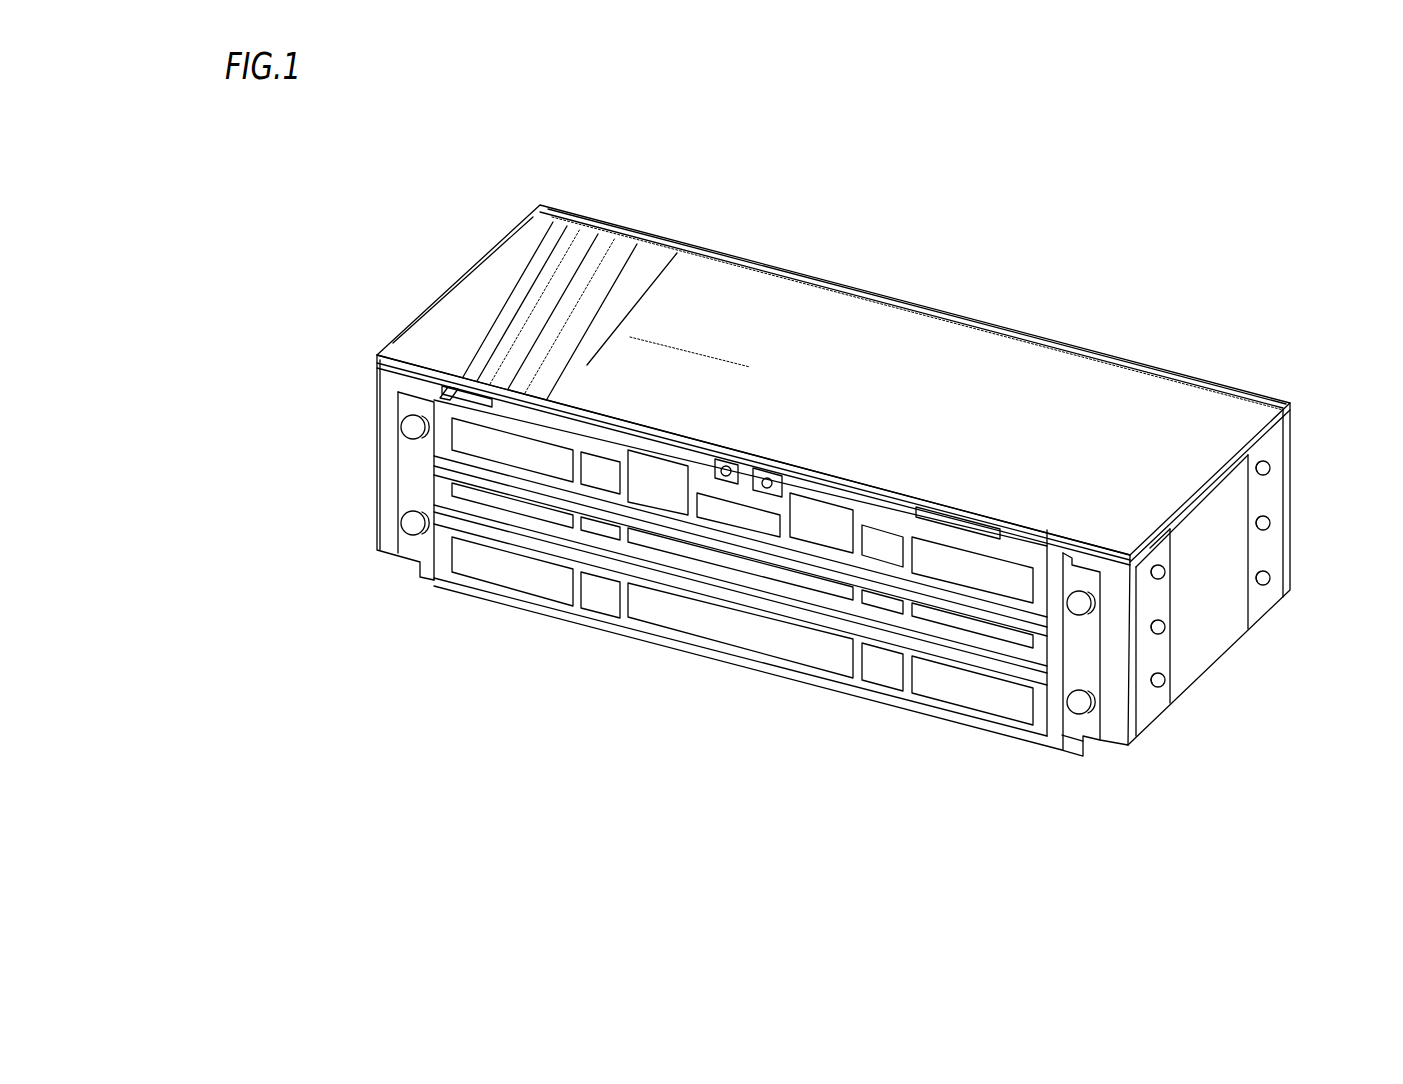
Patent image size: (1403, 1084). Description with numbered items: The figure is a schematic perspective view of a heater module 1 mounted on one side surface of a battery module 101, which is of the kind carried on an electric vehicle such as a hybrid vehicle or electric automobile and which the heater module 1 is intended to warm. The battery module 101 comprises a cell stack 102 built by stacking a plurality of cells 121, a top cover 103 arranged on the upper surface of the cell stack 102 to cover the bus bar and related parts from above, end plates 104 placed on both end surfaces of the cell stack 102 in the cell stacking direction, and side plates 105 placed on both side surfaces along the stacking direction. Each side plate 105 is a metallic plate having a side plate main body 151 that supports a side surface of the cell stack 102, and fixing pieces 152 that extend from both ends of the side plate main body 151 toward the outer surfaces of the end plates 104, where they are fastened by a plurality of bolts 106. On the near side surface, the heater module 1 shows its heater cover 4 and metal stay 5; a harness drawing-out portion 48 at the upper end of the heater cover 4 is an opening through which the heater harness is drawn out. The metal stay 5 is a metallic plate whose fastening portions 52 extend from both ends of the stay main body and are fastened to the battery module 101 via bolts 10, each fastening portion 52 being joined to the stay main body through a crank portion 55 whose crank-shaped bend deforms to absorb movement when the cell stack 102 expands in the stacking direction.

The heater module 1 is at (520, 575).
The heater cover 4 is at (440, 385).
The metal stay 5 is at (737, 590).
The bolts 10 is at (402, 523).
The harness drawing-out portion 48 is at (507, 400).
The fastening portions 52 is at (405, 404).
The crank portions 55 is at (1072, 745).
The battery module 101 is at (1115, 335).
The cell stack 102 is at (603, 220).
The top cover 103 is at (902, 294).
The end plates 104 is at (479, 290).
The side plates 105 is at (1216, 675).
The bolts 106 is at (1165, 680).
The cells 121 is at (676, 228).
The side plate main body 151 is at (1142, 710).
The fixing pieces 152 is at (1150, 695).